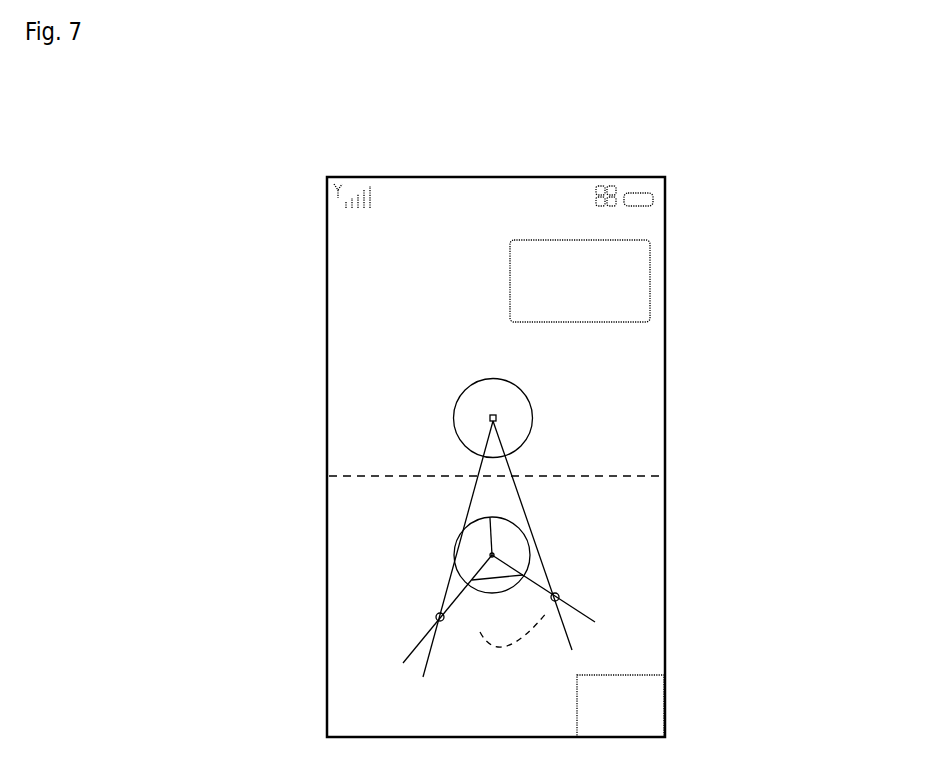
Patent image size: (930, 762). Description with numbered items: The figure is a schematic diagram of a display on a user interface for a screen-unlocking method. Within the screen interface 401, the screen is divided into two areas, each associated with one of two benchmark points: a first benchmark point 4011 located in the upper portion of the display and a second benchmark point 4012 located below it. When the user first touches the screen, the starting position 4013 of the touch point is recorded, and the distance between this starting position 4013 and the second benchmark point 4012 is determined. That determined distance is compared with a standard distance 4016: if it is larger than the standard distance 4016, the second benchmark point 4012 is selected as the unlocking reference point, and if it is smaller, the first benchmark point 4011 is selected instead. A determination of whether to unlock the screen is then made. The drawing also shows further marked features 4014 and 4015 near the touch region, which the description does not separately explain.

The terminal display screen 401 is at (388, 240).
The viewer position icon 4011 is at (491, 417).
The target position icon 4012 is at (492, 555).
The right boundary marker 4013 is at (555, 597).
The left boundary marker and range arc 4014 is at (480, 631).
The field of view boundary line 4015 is at (440, 617).
The direction indicator 4016 is at (490, 531).